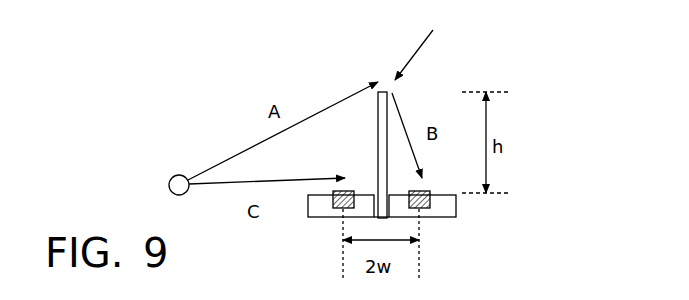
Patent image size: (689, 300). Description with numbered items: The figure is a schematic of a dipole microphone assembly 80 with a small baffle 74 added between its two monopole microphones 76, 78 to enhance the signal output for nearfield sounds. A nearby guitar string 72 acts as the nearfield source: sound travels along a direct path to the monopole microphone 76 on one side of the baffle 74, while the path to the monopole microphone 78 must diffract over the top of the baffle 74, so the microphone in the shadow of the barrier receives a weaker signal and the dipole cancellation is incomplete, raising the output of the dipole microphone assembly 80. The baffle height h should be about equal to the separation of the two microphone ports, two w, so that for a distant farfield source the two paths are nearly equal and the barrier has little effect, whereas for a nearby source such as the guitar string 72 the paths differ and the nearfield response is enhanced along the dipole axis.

The guitar string 72 is at (169, 183).
The small baffle 74 is at (378, 145).
The monopole microphone 76 is at (334, 200).
The monopole microphone 78 is at (420, 208).
The dipole microphone assembly 80 is at (458, 207).